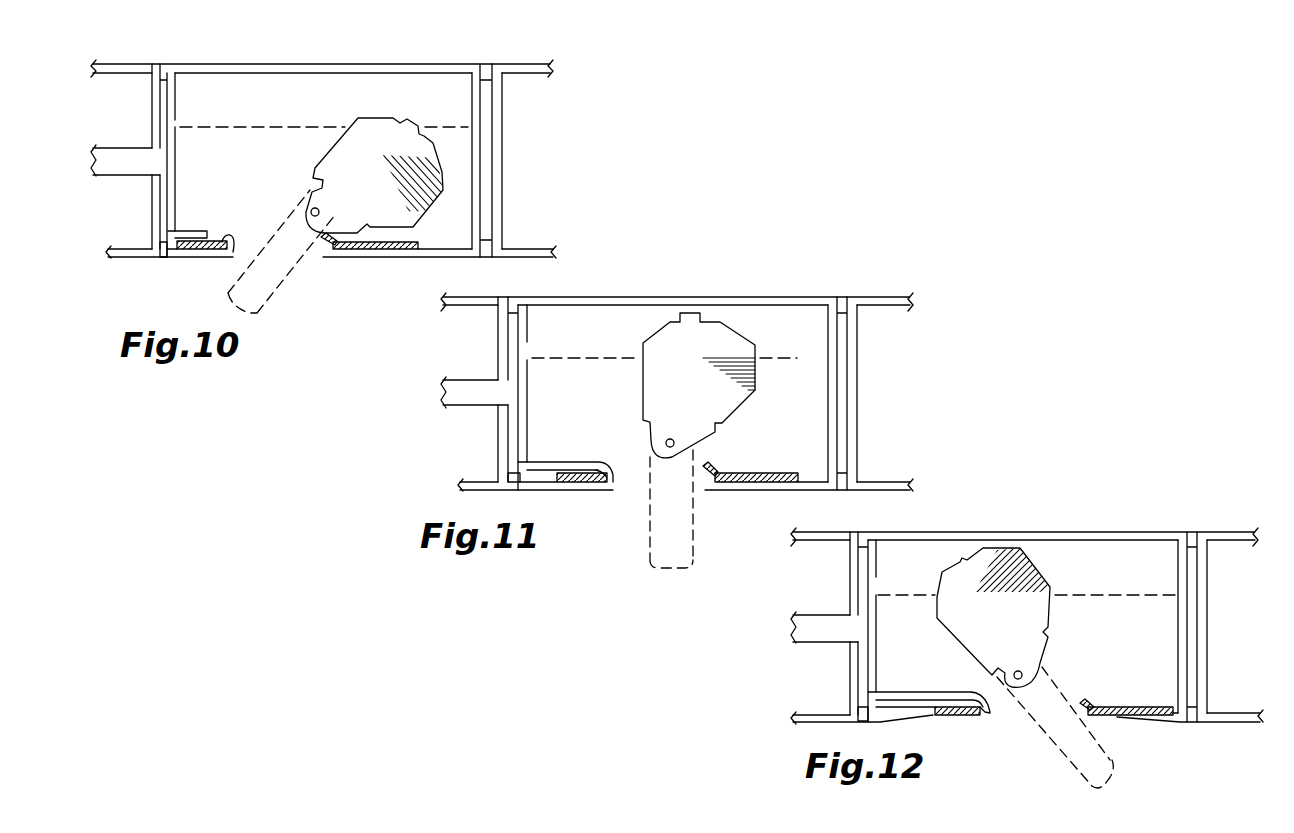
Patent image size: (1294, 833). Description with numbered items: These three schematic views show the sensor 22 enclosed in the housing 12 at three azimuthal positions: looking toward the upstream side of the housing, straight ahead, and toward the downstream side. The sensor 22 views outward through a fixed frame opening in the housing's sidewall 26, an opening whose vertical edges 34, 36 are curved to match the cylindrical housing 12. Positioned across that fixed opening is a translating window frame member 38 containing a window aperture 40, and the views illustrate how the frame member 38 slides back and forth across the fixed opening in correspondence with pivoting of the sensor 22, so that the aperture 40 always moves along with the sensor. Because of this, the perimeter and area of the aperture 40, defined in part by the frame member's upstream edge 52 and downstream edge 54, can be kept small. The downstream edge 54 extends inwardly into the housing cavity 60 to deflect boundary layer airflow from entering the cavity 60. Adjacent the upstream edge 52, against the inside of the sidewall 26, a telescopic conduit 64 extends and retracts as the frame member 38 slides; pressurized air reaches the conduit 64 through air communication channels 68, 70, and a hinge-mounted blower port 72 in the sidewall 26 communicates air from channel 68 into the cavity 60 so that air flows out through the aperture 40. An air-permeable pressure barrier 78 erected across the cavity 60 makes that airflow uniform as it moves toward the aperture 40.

In FIG. 10, the housing 12 is at (359, 61).
In FIG. 11, the housing 12 is at (632, 290).
In FIG. 12, the housing 12 is at (983, 526).
In FIG. 10, the sensor 22 is at (455, 170).
In FIG. 11, the sensor 22 is at (718, 348).
In FIG. 12, the sensor 22 is at (1015, 588).
In FIG. 11, the sidewall 26 is at (790, 297).
In FIG. 12, the sidewall 26 is at (1107, 532).
In FIG. 10, the vertical edge 34 is at (400, 250).
In FIG. 11, the vertical edge 34 is at (763, 483).
In FIG. 12, the vertical edge 34 is at (1110, 716).
In FIG. 10, the vertical edge 36 is at (223, 257).
In FIG. 11, the vertical edge 36 is at (595, 486).
In FIG. 12, the vertical edge 36 is at (938, 717).
In FIG. 10, the window frame member 38 is at (207, 238).
In FIG. 11, the window frame member 38 is at (580, 464).
In FIG. 12, the window frame member 38 is at (1126, 700).
In FIG. 10, the window aperture 40 is at (279, 268).
In FIG. 11, the window aperture 40 is at (677, 516).
In FIG. 12, the window aperture 40 is at (1074, 742).
In FIG. 10, the upstream edge 52 is at (233, 253).
In FIG. 11, the upstream edge 52 is at (617, 487).
In FIG. 12, the upstream edge 52 is at (990, 714).
In FIG. 10, the downstream edge 54 is at (328, 248).
In FIG. 11, the downstream edge 54 is at (705, 476).
In FIG. 12, the downstream edge 54 is at (1088, 712).
In FIG. 10, the housing cavity 60 is at (287, 145).
In FIG. 11, the housing cavity 60 is at (818, 395).
In FIG. 12, the housing cavity 60 is at (1163, 625).
In FIG. 10, the telescopic conduit 64 is at (190, 231).
In FIG. 11, the telescopic conduit 64 is at (543, 462).
In FIG. 12, the telescopic conduit 64 is at (887, 692).
In FIG. 10, the air communication channel 68 is at (167, 194).
In FIG. 11, the air communication channel 68 is at (518, 425).
In FIG. 12, the air communication channel 68 is at (870, 662).
In FIG. 10, the air communication channel 70 is at (118, 148).
In FIG. 11, the air communication channel 70 is at (472, 380).
In FIG. 12, the air communication channel 70 is at (823, 615).
In FIG. 10, the port 72 is at (178, 118).
In FIG. 11, the port 72 is at (528, 346).
In FIG. 12, the port 72 is at (880, 578).
In FIG. 10, the air-permeable pressure barrier 78 is at (447, 127).
In FIG. 11, the air-permeable pressure barrier 78 is at (797, 358).
In FIG. 12, the air-permeable pressure barrier 78 is at (1140, 595).